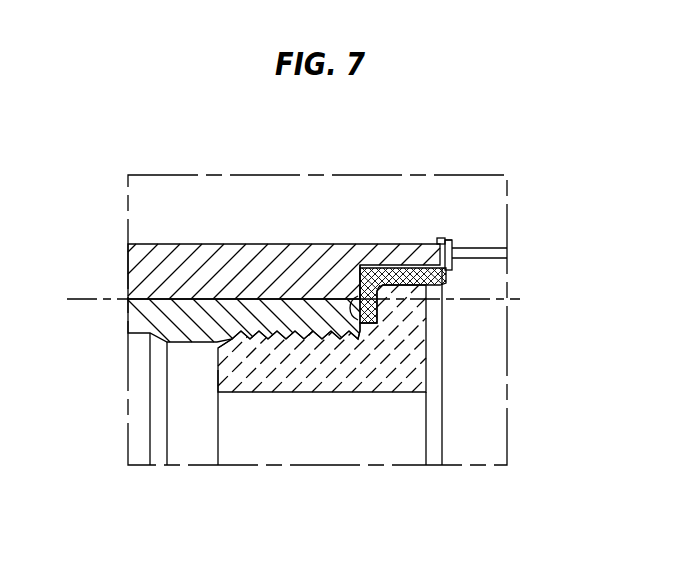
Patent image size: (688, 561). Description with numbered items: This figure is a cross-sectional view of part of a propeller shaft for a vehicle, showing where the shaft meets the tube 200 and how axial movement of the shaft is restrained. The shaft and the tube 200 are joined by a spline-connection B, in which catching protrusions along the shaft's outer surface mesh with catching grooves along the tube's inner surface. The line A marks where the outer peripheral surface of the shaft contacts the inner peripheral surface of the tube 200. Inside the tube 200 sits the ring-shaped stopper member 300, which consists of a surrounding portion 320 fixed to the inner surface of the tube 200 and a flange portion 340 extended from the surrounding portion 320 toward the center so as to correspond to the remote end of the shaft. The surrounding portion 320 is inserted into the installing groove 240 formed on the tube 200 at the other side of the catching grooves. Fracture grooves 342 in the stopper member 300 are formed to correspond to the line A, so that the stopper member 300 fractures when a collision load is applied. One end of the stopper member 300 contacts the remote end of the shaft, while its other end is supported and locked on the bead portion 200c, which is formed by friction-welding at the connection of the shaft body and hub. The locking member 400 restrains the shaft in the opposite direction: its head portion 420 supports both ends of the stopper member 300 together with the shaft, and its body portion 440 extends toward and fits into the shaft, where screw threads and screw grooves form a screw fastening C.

The tube 200 is at (201, 262).
The bead portion 200c is at (450, 247).
The installing groove 240 is at (395, 272).
The stopper member 300 is at (453, 270).
The surrounding portion 320 is at (447, 240).
The flange portion 340 is at (358, 283).
The fracture grooves 342 is at (365, 333).
The locking member 400 is at (372, 408).
The head portion 420 is at (410, 362).
The body portion 440 is at (238, 382).
The line A is at (84, 298).
The spline-connection B is at (167, 300).
The screw fastening C is at (220, 358).